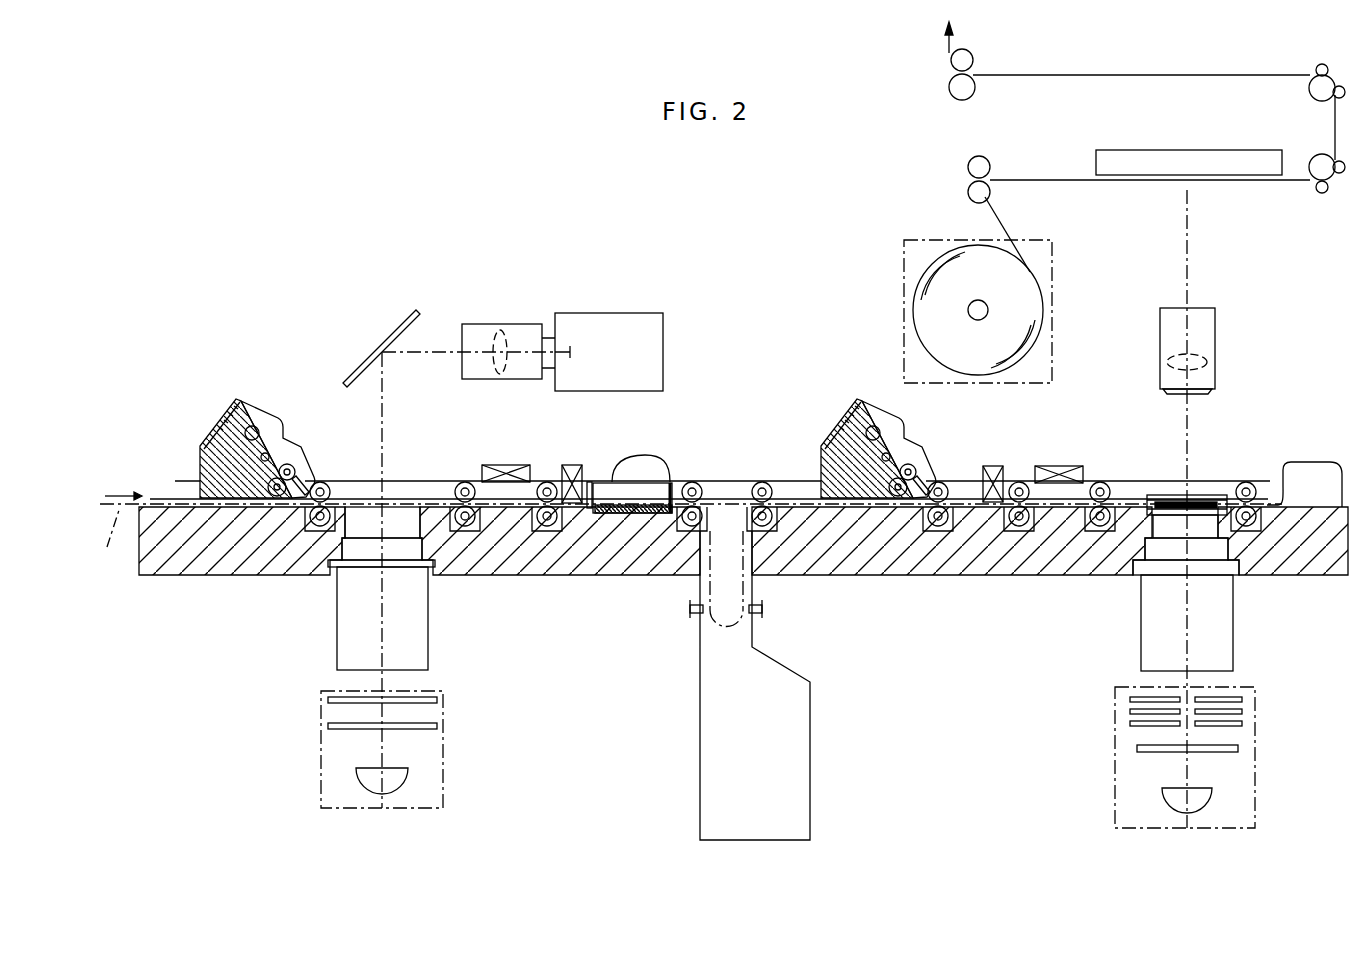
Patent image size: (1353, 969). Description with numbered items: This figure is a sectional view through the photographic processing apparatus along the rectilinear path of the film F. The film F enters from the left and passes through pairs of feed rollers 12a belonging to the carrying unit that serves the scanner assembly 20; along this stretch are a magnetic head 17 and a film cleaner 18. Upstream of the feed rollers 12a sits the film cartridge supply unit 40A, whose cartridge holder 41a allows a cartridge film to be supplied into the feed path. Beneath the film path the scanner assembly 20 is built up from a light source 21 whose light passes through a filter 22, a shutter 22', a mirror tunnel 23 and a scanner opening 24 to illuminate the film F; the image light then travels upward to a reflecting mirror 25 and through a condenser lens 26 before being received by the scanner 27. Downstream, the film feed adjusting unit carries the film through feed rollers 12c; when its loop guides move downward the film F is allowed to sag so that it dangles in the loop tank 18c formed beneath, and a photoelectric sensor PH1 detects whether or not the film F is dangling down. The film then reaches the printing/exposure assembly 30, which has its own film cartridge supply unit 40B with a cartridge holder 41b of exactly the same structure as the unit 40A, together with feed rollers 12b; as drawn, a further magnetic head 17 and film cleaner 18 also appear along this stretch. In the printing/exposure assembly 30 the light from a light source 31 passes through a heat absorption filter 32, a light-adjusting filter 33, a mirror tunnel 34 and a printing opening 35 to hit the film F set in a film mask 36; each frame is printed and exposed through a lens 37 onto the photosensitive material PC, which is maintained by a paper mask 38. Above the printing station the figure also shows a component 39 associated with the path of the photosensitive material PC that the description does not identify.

The film F is at (117, 536).
The feed rollers 12a is at (325, 482).
The feed rollers 12b is at (940, 482).
The feed rollers 12c is at (691, 482).
The magnetic head 17 is at (501, 465).
The film cleaner 18 is at (570, 465).
The loop tank 18c is at (700, 733).
The scanner assembly 20 is at (354, 346).
The light source 21 is at (405, 775).
The filter 22 is at (429, 740).
The shutter 22' is at (431, 697).
The mirror tunnel 23 is at (417, 632).
The scanner opening 24 is at (397, 515).
The reflecting mirror 25 is at (397, 333).
The condenser lens 26 is at (500, 324).
The scanner 27 is at (617, 313).
The printing/exposure assembly 30 is at (1211, 451).
The light source 31 is at (1208, 790).
The heat absorption filter 32 is at (1238, 748).
The light-adjusting filter 33 is at (1245, 710).
The mirror tunnel 34 is at (1227, 633).
The printing opening 35 is at (1207, 528).
The film mask 36 is at (1200, 500).
The lens 37 is at (1210, 330).
The paper mask 38 is at (1163, 157).
The paper roll 39 is at (1052, 256).
The film cartridge supply unit 40A is at (212, 399).
The film cartridge supply unit 40B is at (840, 399).
The cartridge holder 41a is at (203, 440).
The cartridge holder 41b is at (832, 445).
The photosensitive material PC is at (1033, 180).
The photoelectric sensor PH1 is at (752, 620).